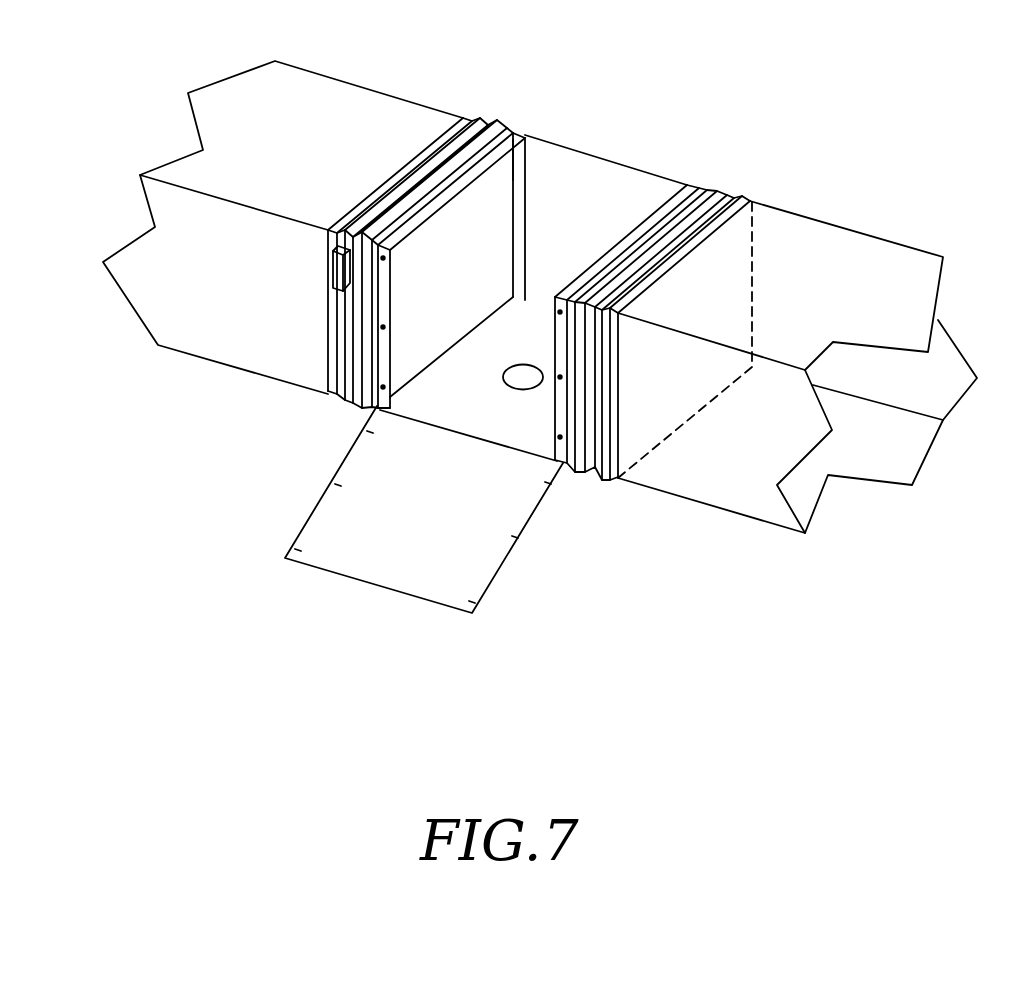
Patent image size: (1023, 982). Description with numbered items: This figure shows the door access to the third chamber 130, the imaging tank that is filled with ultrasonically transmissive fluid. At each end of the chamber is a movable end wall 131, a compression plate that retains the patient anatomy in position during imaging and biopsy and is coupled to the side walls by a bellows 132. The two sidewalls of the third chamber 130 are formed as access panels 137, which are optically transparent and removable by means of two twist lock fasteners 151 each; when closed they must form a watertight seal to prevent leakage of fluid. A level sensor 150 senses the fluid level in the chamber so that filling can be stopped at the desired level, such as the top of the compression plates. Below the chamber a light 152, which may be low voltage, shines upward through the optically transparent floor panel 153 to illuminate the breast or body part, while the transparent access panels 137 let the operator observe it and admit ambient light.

The third chamber 130 is at (688, 172).
The movable end wall 131 is at (497, 173).
The bellows 132 is at (505, 102).
The access panels 137 is at (580, 250).
The level sensor 150 is at (330, 263).
The twist lock fasteners 151 is at (383, 327).
The light 152 is at (518, 383).
The floor panel 153 is at (460, 378).